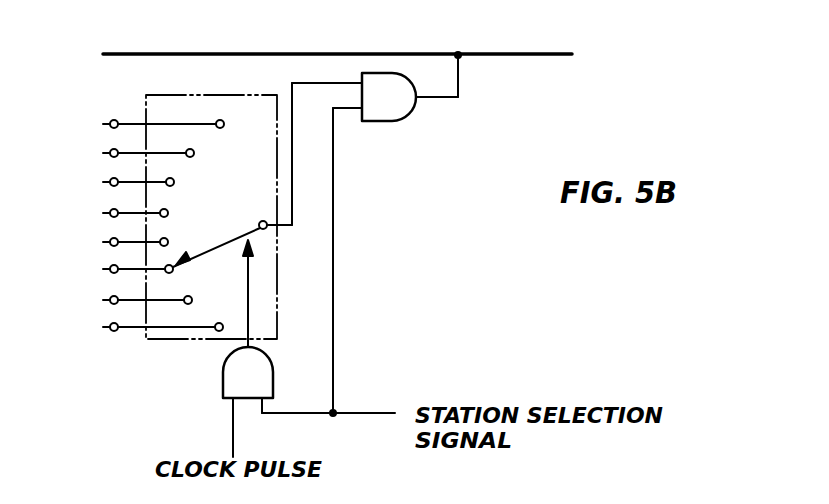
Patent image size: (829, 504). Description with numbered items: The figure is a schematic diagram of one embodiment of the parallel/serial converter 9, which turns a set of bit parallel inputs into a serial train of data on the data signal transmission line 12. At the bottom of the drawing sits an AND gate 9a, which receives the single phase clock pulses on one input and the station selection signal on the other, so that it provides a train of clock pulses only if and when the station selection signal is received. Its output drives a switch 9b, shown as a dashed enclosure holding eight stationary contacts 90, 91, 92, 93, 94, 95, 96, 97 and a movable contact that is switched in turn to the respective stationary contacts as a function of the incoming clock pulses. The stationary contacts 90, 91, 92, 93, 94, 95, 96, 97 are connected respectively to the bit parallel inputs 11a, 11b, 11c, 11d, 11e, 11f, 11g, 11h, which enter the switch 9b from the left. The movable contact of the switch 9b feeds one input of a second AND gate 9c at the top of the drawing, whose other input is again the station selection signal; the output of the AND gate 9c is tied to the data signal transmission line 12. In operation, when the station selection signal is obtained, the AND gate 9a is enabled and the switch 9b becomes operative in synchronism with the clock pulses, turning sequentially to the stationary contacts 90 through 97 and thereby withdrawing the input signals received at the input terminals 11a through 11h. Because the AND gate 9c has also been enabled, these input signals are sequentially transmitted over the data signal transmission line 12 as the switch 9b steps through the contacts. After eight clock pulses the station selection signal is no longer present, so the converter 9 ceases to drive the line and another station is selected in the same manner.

The parallel/serial converter 9 is at (433, 247).
The AND gate 9a is at (228, 372).
The switch 9b is at (278, 305).
The AND gate 9c is at (390, 115).
The data signal transmission line 12 is at (359, 52).
The bit parallel input 11a is at (138, 125).
The bit parallel input 11b is at (123, 154).
The bit parallel input 11c is at (113, 183).
The bit parallel input 11d is at (110, 214).
The bit parallel input 11e is at (110, 243).
The bit parallel input 11f is at (112, 270).
The bit parallel input 11g is at (122, 301).
The bit parallel input 11h is at (137, 328).
The stationary contact 90 is at (224, 122).
The stationary contact 91 is at (194, 151).
The stationary contact 92 is at (174, 180).
The stationary contact 93 is at (168, 211).
The stationary contact 94 is at (168, 240).
The stationary contact 95 is at (172, 266).
The stationary contact 96 is at (191, 297).
The stationary contact 97 is at (222, 324).